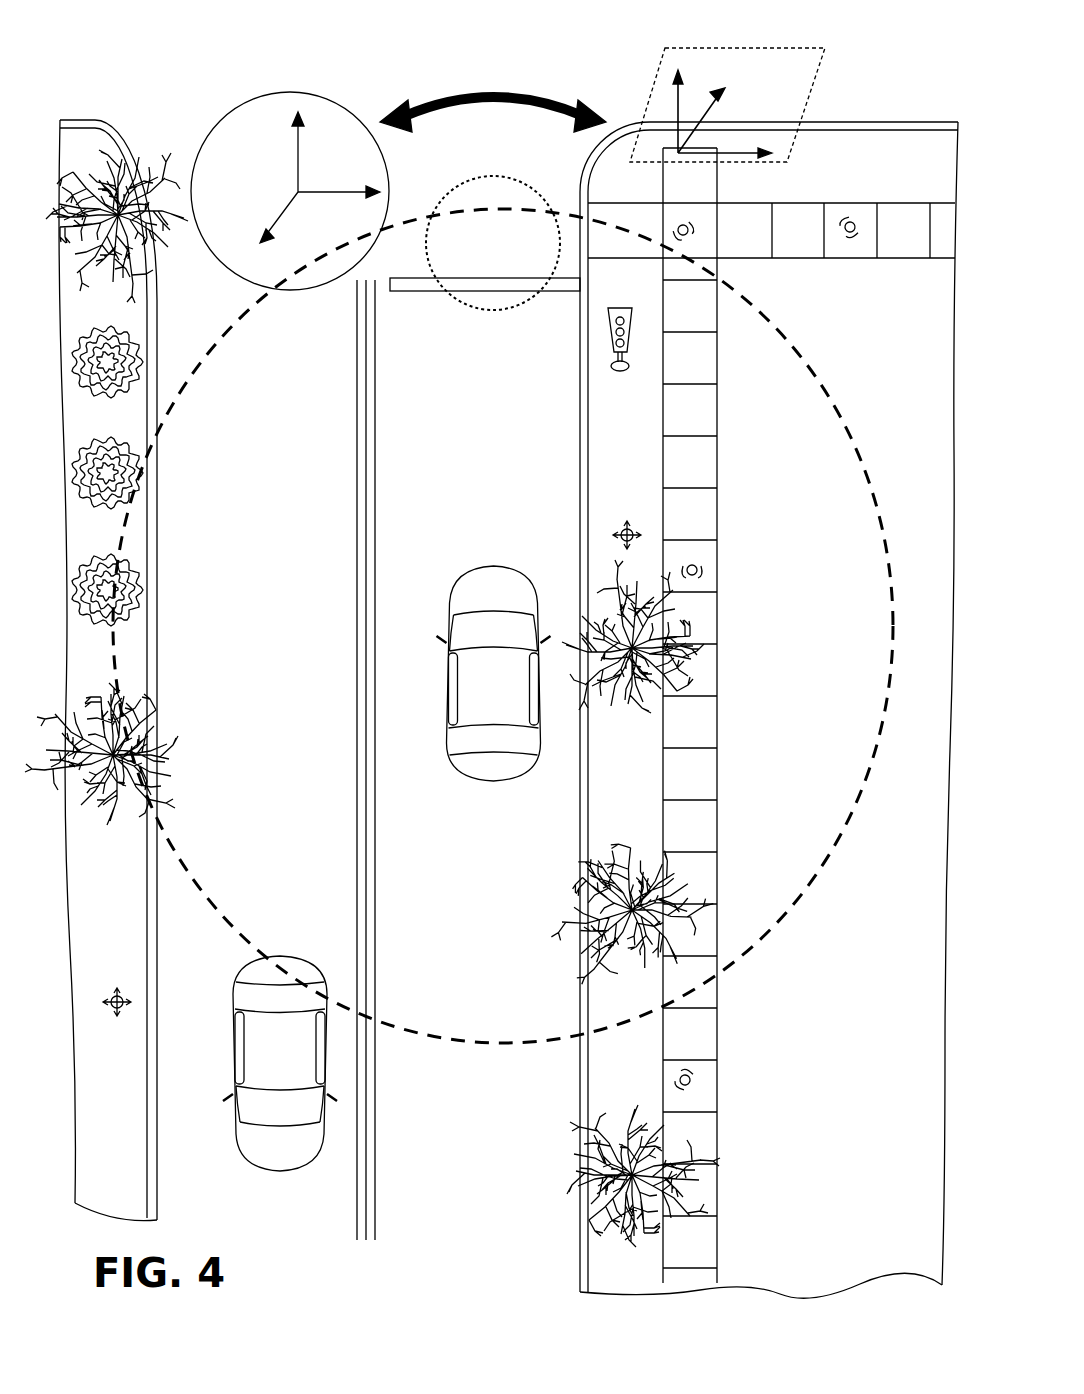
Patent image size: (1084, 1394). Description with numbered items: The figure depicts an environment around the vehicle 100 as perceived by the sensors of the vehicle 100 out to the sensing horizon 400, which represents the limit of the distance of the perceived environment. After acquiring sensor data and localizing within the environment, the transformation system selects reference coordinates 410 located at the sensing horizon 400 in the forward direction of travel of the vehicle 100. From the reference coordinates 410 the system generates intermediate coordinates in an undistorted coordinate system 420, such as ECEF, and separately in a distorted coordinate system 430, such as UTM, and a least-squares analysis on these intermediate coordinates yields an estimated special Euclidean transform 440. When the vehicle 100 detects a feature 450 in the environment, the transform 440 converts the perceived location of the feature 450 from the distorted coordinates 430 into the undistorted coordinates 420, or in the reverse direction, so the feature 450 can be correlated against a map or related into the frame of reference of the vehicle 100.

The vehicle 100 is at (507, 695).
The sensing horizon 400 is at (793, 850).
The reference coordinates 410 is at (518, 305).
The undistorted coordinate system 420 is at (255, 100).
The distorted coordinate system 430 is at (805, 108).
The SE(3) transform 440 is at (476, 86).
The feature 450 is at (628, 335).